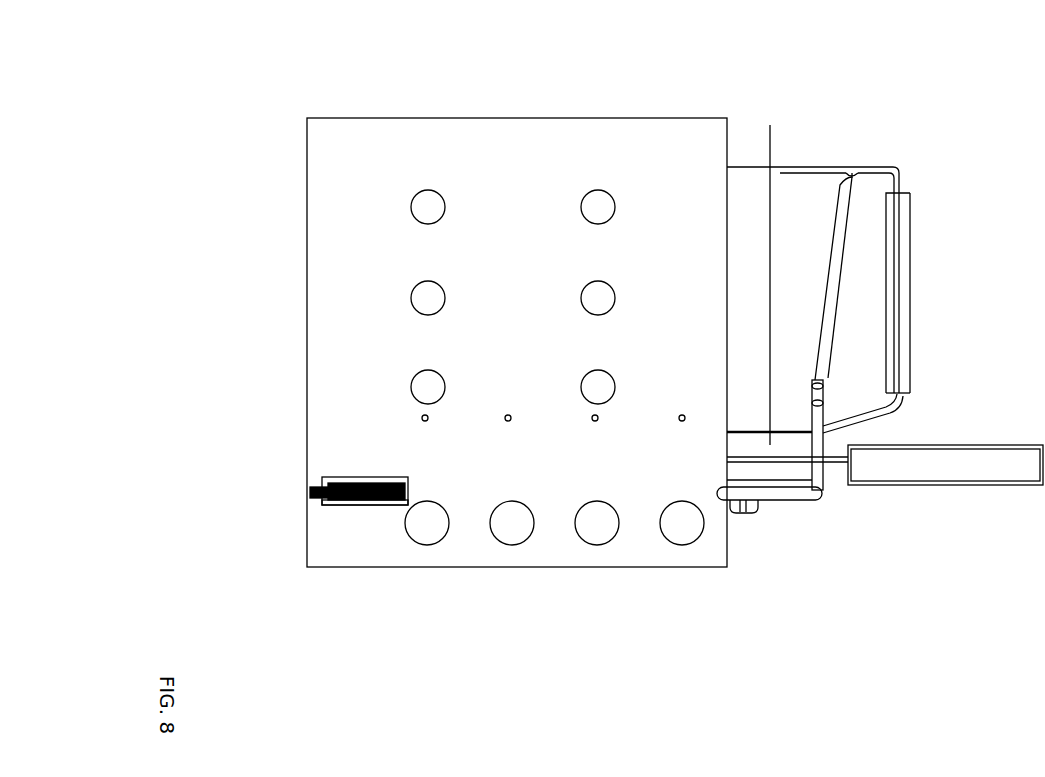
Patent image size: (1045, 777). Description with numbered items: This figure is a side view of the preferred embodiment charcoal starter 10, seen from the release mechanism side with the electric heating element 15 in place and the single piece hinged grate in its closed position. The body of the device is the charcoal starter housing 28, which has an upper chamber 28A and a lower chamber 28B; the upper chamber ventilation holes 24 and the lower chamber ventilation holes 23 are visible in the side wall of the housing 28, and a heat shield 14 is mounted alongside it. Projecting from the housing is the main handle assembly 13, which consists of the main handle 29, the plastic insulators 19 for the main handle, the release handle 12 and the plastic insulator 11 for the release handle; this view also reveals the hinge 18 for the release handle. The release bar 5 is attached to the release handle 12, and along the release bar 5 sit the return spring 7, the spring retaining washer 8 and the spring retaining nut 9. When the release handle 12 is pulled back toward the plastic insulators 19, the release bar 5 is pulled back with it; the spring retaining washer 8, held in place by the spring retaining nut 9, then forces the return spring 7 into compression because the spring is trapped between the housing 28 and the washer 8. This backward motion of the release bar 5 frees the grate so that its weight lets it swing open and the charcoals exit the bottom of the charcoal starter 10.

The release bar 5 is at (788, 503).
The return spring 7 is at (366, 507).
The spring retaining washer 8 is at (333, 507).
The spring retaining nut 9 is at (318, 499).
The charcoal starter 10 is at (268, 205).
The plastic insulator for release handle 11 is at (830, 218).
The release handle 12 is at (912, 288).
The main handle assembly 13 is at (879, 163).
The heat shield 14 is at (768, 123).
The electric heating element 15 is at (962, 488).
The hinge for the release handle 18 is at (848, 165).
The plastic insulators for the main handle 19 is at (913, 222).
The lower chamber ventilation holes 23 is at (595, 547).
The upper chamber ventilation holes 24 is at (409, 388).
The charcoal starter housing 28 is at (305, 325).
The upper chamber 28A is at (423, 198).
The lower chamber 28B is at (506, 534).
The main handle 29 is at (901, 408).